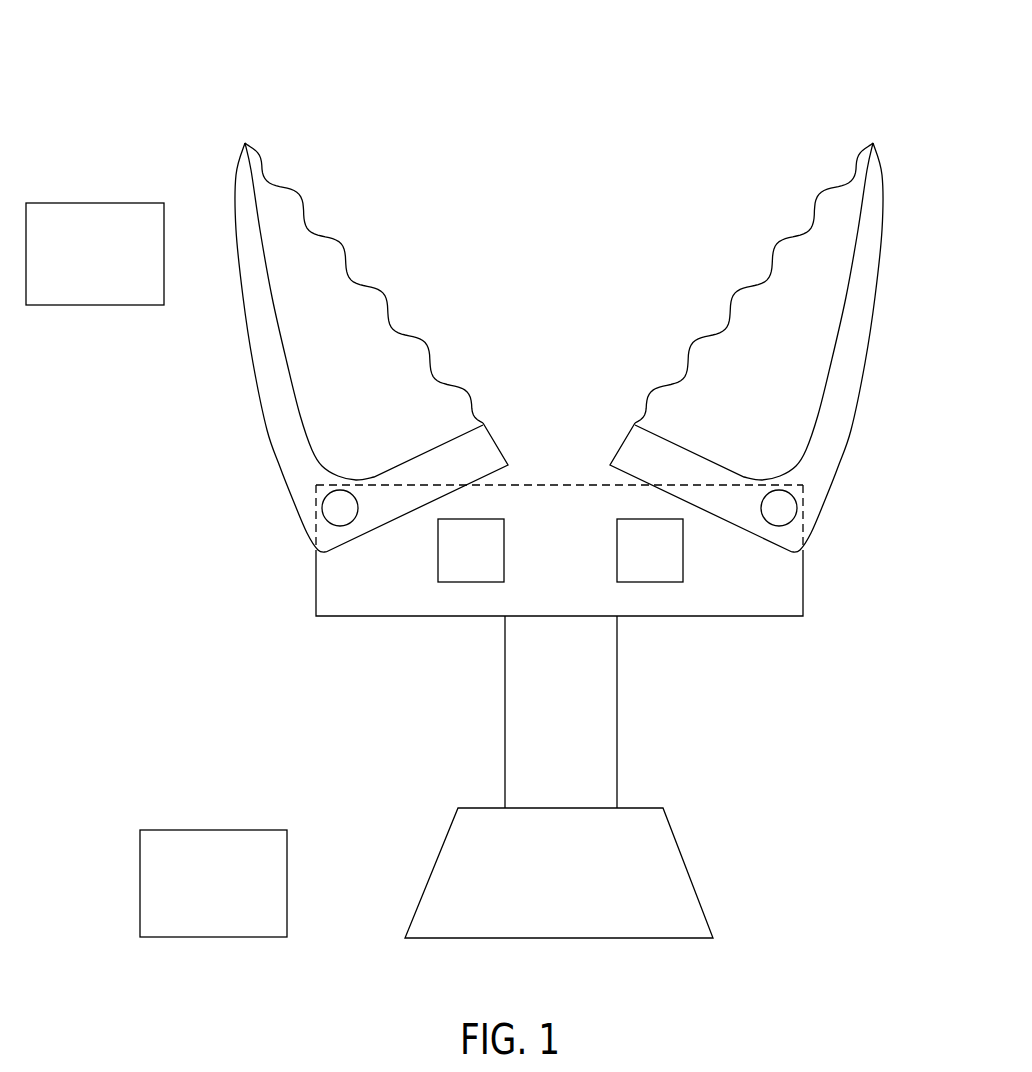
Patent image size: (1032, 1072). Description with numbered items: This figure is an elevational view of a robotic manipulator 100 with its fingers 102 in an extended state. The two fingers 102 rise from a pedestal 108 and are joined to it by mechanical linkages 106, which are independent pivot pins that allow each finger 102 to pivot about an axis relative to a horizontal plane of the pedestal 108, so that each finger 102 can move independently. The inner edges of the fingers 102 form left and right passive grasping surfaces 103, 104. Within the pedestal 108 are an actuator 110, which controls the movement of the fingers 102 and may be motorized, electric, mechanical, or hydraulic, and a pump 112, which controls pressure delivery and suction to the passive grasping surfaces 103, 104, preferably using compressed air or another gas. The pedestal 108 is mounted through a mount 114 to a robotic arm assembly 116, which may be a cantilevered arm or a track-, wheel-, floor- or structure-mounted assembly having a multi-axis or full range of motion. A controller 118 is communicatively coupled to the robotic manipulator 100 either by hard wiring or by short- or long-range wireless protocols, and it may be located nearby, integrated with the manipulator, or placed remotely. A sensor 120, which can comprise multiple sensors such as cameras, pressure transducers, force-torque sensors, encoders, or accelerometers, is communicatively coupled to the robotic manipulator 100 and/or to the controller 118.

The robotic manipulator 100 is at (322, 90).
The fingers 102 is at (267, 400).
The left passive grasping surface 103 is at (385, 320).
The right passive grasping surface 104 is at (737, 320).
The mechanical linkages 106 is at (331, 511).
The pedestal 108 is at (415, 605).
The actuator 110 is at (456, 562).
The pump 112 is at (635, 562).
The mount 114 is at (608, 722).
The robotic arm assembly 116 is at (544, 897).
The controller 118 is at (198, 897).
The sensor 120 is at (78, 267).